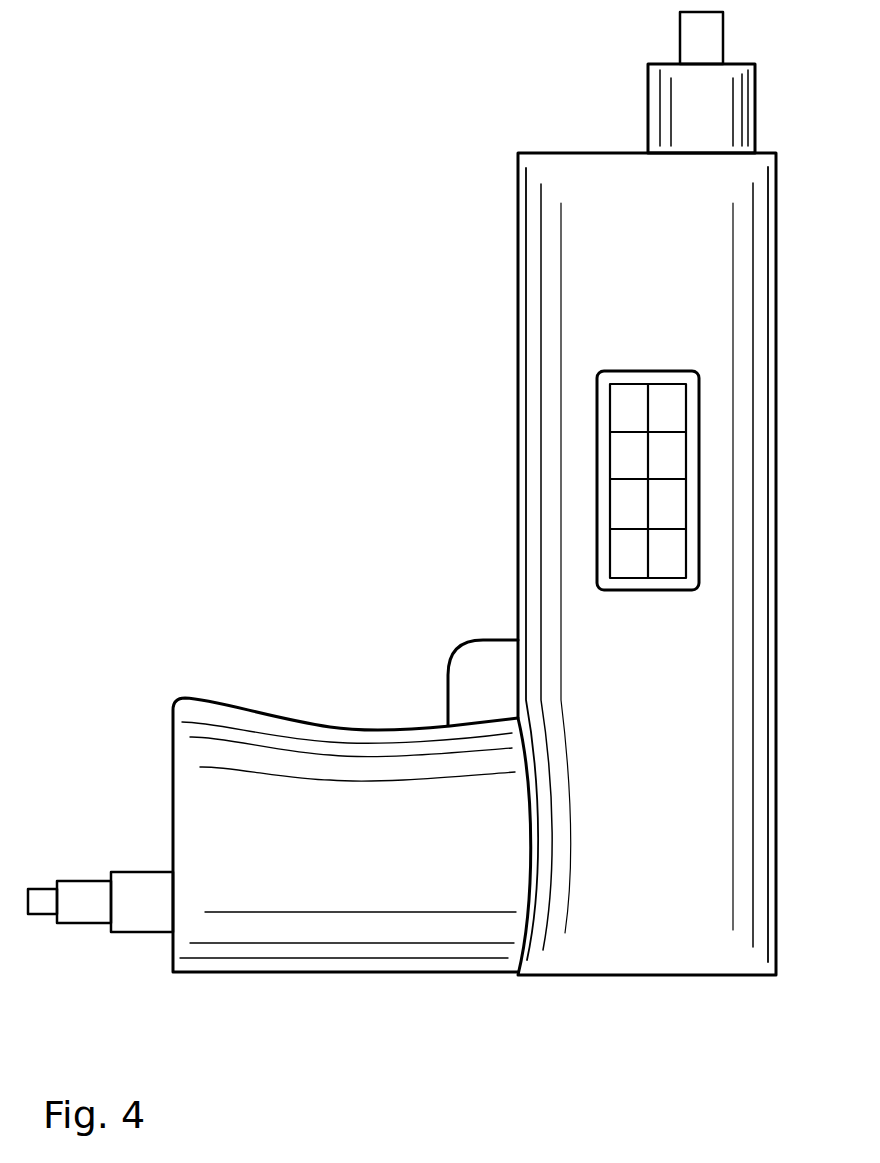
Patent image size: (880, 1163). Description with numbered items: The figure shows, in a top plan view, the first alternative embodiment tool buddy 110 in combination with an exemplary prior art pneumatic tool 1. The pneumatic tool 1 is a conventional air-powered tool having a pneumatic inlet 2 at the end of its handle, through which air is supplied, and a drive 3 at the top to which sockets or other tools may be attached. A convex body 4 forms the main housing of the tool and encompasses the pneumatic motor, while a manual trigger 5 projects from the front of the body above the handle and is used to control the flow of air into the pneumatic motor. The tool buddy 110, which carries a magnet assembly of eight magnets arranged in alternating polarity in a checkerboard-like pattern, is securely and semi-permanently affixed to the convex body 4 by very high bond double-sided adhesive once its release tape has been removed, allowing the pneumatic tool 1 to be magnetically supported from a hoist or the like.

The pneumatic tool 1 is at (669, 982).
The pneumatic inlet 2 is at (122, 910).
The drive 3 is at (697, 51).
The convex body 4 is at (518, 292).
The manual trigger 5 is at (457, 680).
The tool buddy 110 is at (586, 518).